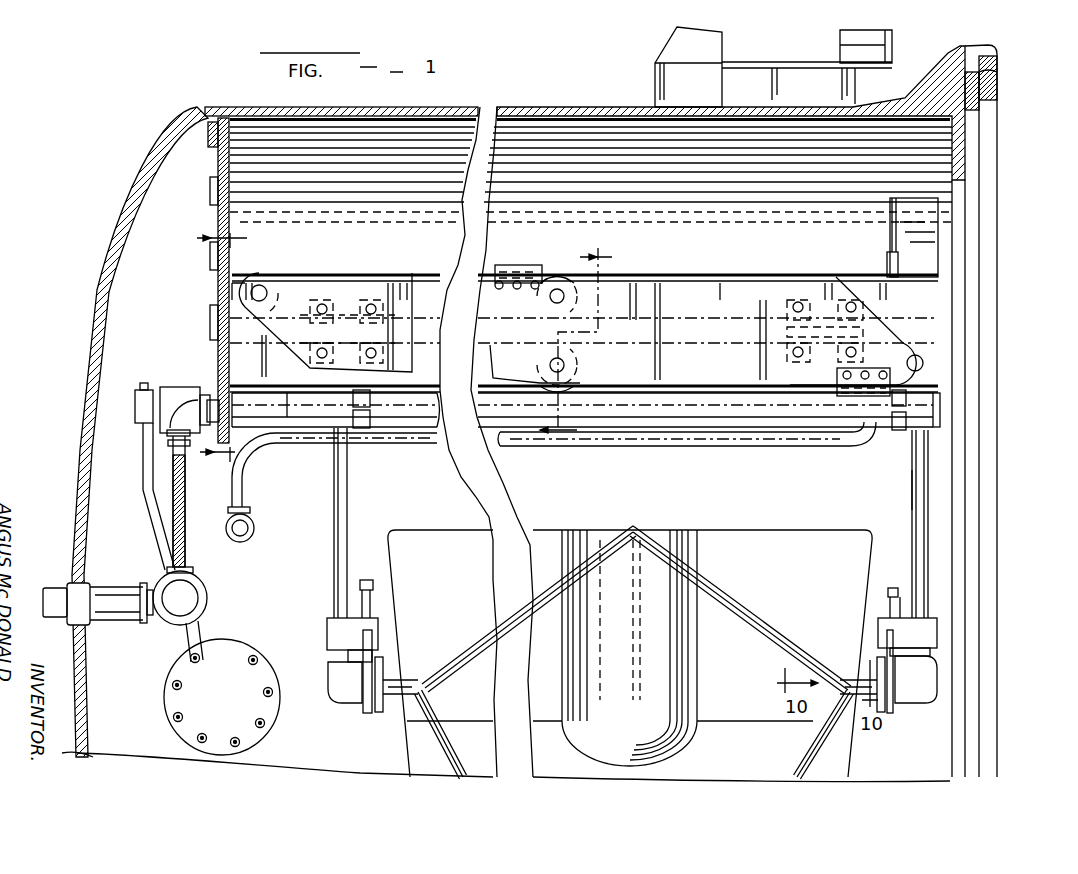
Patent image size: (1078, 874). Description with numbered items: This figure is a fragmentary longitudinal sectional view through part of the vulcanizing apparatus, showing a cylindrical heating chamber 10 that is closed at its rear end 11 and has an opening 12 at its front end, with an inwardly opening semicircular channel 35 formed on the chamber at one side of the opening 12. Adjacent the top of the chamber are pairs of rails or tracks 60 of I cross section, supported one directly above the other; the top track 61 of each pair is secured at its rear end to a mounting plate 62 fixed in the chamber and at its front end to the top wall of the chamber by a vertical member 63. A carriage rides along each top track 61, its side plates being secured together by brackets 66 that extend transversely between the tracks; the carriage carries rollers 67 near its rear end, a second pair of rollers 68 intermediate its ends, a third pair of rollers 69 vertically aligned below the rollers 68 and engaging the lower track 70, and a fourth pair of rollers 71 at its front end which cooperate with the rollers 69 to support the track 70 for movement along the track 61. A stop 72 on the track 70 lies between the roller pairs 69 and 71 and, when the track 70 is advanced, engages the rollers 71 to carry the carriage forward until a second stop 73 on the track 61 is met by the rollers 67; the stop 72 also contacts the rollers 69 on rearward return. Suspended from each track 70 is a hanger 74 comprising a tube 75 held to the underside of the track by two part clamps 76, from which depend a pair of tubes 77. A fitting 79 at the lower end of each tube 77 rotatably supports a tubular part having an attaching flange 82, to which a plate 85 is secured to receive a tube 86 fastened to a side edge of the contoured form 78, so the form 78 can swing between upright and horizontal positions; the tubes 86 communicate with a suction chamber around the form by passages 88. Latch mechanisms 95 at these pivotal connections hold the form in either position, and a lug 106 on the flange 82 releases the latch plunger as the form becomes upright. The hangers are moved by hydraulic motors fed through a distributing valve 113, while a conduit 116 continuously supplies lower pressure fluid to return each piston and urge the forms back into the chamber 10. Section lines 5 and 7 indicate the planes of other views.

The section line 5- 5 is at (217, 357).
The section line 7- 7 is at (586, 361).
The heating chamber 10 is at (586, 98).
The rear end 11 is at (82, 377).
The opening 12 is at (952, 132).
The semicircular channel 35 is at (987, 78).
The rails or tracks 60 is at (335, 273).
The top track 61 is at (233, 280).
The mounting plate 62 is at (218, 158).
The vertical member 63 is at (908, 218).
The brackets 66 is at (403, 287).
The rollers 67 is at (263, 277).
The second pair of rollers 68 is at (563, 280).
The third pair of rollers 69 is at (540, 364).
The track 70 is at (240, 365).
The fourth pair of rollers 71 is at (937, 362).
The stop 72 is at (853, 397).
The second stop 73 is at (520, 266).
The hanger 74 is at (912, 487).
The tube 75 is at (705, 417).
The two part clamps 76 is at (362, 432).
The tubes 77 is at (340, 507).
The form 78 is at (763, 577).
The fitting 79 is at (328, 680).
The attaching flange 82 is at (363, 703).
The plate 85 is at (378, 660).
The tube 86 is at (403, 680).
The passages 88 is at (763, 630).
The latch mechanisms 95 is at (383, 623).
The lug 106 is at (328, 635).
The distributing valve 113 is at (223, 652).
The conduit 116 is at (280, 448).